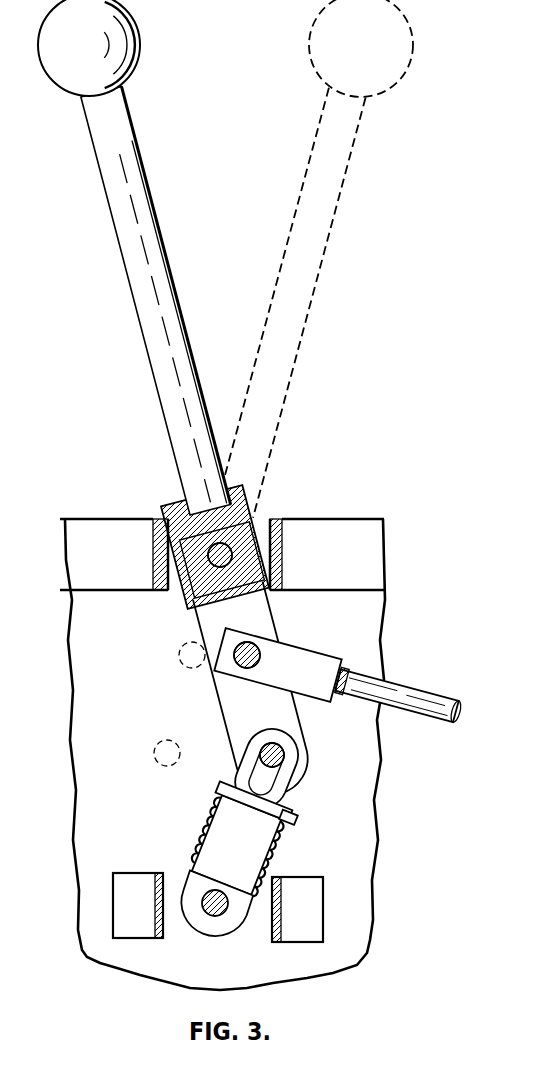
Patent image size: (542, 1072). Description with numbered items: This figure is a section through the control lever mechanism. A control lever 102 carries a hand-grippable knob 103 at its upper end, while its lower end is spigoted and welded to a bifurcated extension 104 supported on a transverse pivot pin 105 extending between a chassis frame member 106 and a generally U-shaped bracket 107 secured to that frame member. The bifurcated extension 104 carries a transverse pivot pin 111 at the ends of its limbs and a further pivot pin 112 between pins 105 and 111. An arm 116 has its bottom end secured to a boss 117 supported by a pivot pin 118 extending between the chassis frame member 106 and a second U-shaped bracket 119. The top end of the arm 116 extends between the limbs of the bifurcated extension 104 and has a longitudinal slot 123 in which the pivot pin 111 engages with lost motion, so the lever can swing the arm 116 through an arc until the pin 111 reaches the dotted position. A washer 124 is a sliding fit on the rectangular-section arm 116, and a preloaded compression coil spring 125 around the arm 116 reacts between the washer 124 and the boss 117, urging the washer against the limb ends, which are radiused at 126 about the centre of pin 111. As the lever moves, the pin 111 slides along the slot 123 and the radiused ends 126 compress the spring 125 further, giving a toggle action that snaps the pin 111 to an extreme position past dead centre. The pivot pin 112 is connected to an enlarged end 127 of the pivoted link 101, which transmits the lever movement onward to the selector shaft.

The pivoted link 101 is at (432, 703).
The control lever 102 is at (113, 213).
The hand-grippable knob 103 is at (88, 61).
The bifurcated extension 104 is at (268, 587).
The transverse pivot pin 105 is at (190, 582).
The chassis frame member 106 is at (138, 709).
The generally U-shaped bracket 107 is at (142, 528).
The transverse pivot pin 111 is at (153, 752).
The further transverse pivot pin 112 is at (178, 655).
The arm 116 is at (247, 849).
The boss 117 is at (233, 927).
The transverse pivot pin 118 is at (208, 913).
The second generally U-shaped bracket 119 is at (162, 875).
The longitudinal slot 123 is at (287, 776).
The washer 124 is at (296, 815).
The preloaded compression coil spring 125 is at (212, 810).
The radiused ends 126 is at (302, 768).
The enlarged end 127 is at (308, 681).